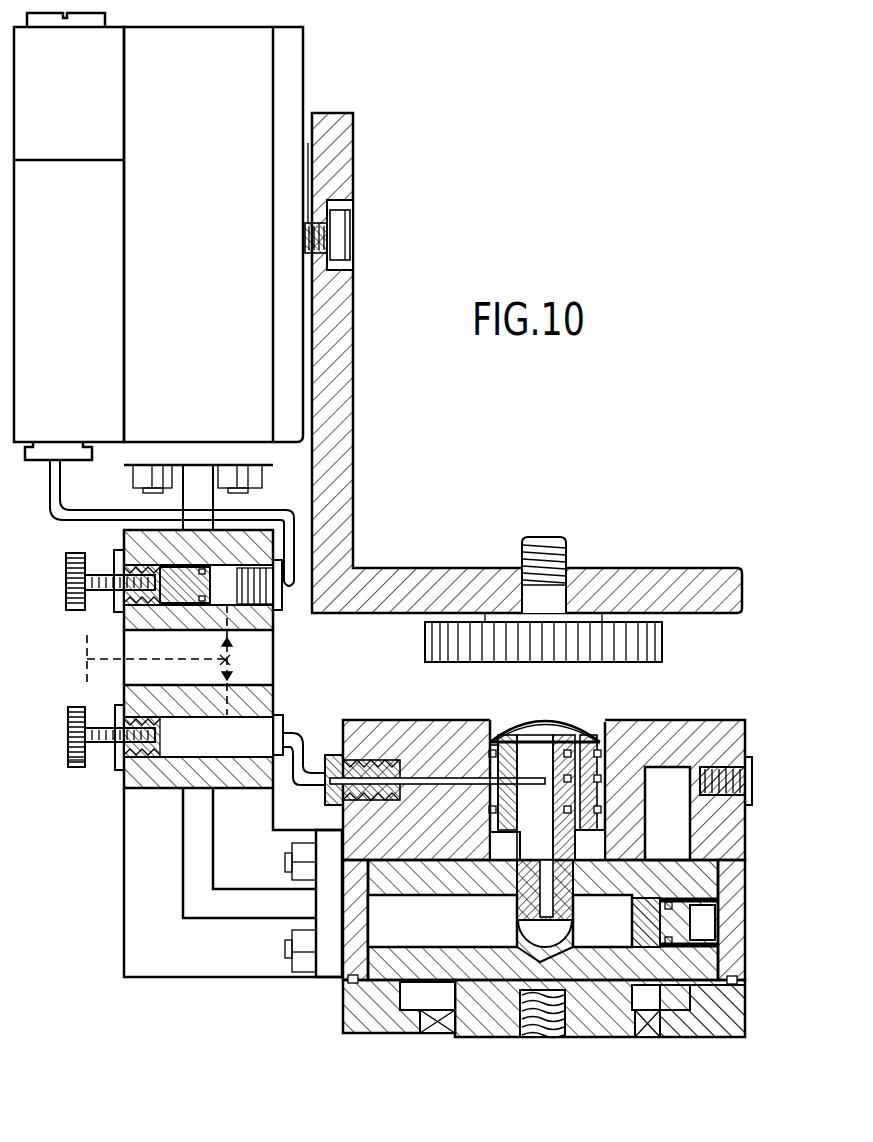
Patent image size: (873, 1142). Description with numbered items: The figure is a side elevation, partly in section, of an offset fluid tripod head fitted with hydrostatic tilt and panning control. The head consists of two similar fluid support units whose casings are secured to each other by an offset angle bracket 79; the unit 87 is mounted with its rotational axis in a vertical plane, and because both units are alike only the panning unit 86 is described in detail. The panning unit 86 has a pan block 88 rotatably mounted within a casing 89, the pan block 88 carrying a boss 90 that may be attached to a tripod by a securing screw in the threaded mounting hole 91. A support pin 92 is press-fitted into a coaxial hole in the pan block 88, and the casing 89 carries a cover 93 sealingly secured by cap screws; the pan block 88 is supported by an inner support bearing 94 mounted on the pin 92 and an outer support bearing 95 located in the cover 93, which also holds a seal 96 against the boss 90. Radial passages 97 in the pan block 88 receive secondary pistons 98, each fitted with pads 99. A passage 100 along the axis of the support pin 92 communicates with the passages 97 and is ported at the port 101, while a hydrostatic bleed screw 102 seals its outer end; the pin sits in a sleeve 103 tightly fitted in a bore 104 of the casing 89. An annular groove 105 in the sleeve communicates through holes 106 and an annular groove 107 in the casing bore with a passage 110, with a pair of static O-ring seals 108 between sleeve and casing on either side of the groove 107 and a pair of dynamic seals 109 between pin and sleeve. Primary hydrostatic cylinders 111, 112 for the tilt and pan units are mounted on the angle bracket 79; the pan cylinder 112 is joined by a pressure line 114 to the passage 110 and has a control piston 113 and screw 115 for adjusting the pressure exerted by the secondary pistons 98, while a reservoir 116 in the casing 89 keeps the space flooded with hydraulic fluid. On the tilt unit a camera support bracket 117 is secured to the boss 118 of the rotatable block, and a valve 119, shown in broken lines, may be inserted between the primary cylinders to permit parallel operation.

The offset angle bracket 79 is at (140, 883).
The panning unit 86 is at (538, 873).
The fluid support unit 87 is at (523, 337).
The pan block 88 is at (607, 975).
The casing 89 is at (705, 738).
The boss 90 is at (481, 1020).
The threaded mounting hole 91 is at (541, 1030).
The support pin 92 is at (602, 921).
The cover 93 is at (716, 1020).
The inner support bearing 94 is at (598, 855).
The outer support bearing 95 is at (427, 1007).
The seal 96 is at (650, 1025).
The radial passages 97 is at (436, 934).
The secondary pistons 98 is at (632, 923).
The pads 99 is at (710, 932).
The passage 100 is at (558, 752).
The port 101 is at (531, 735).
The hydrostatic bleed screw 102 is at (542, 738).
The sleeve 103 is at (500, 760).
The bore 104 is at (412, 785).
The annular groove 105 is at (600, 778).
The holes 106 is at (485, 790).
The annular groove 107 is at (600, 782).
The static O-ring seals 108 is at (598, 755).
The dynamic seals 109 is at (493, 745).
The passage 110 is at (395, 770).
The primary hydrostatic cylinder 111 is at (64, 570).
The primary hydrostatic cylinder 112 is at (65, 731).
The control piston 113 is at (178, 728).
The pressure line 114 is at (300, 757).
The screw 115 is at (87, 770).
The reservoir 116 is at (678, 804).
The camera support bracket 117 is at (348, 480).
The boss 118 is at (307, 172).
The valve 119 is at (212, 655).